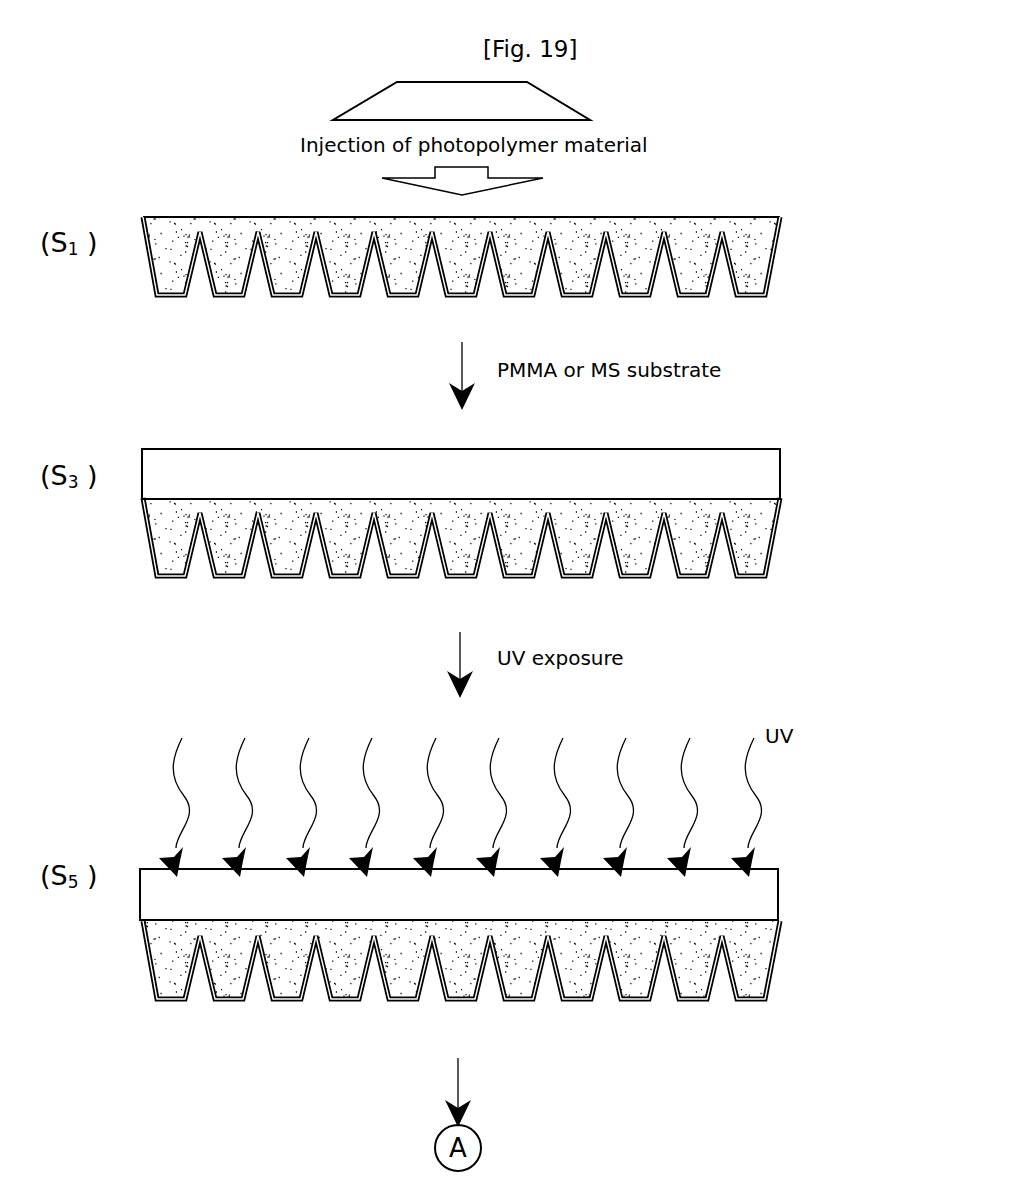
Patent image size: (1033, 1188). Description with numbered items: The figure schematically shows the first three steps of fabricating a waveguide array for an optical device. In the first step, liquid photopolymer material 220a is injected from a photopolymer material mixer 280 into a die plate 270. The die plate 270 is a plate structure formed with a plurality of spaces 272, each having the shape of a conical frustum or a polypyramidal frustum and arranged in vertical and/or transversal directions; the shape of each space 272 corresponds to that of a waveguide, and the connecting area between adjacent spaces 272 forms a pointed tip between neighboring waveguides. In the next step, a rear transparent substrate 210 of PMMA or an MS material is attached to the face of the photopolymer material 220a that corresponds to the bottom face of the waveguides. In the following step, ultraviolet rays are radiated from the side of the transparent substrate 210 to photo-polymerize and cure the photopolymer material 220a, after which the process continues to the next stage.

The photopolymer material mixer 280 is at (563, 102).
The die plate 270 is at (783, 222).
The photopolymer material 220a is at (760, 268).
The space 272 is at (710, 285).
The rear transparent substrate 210 is at (781, 472).